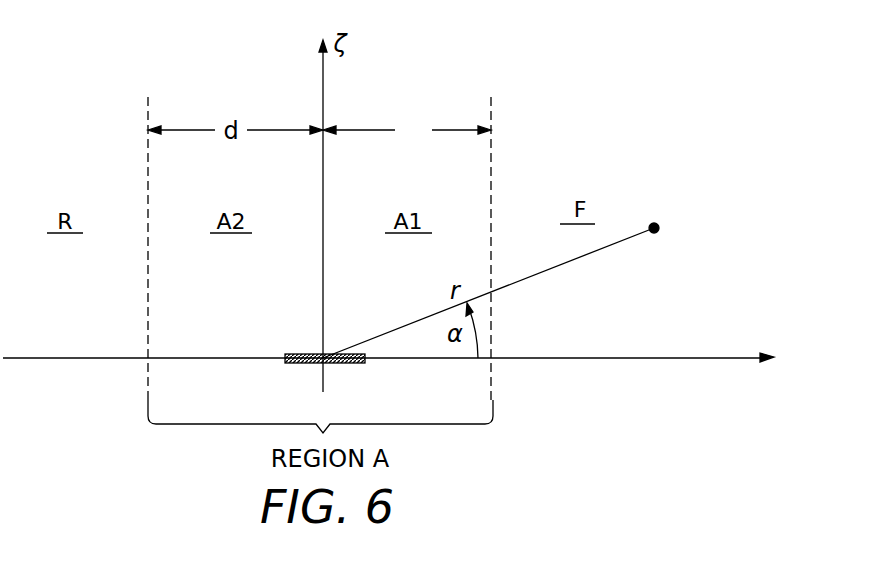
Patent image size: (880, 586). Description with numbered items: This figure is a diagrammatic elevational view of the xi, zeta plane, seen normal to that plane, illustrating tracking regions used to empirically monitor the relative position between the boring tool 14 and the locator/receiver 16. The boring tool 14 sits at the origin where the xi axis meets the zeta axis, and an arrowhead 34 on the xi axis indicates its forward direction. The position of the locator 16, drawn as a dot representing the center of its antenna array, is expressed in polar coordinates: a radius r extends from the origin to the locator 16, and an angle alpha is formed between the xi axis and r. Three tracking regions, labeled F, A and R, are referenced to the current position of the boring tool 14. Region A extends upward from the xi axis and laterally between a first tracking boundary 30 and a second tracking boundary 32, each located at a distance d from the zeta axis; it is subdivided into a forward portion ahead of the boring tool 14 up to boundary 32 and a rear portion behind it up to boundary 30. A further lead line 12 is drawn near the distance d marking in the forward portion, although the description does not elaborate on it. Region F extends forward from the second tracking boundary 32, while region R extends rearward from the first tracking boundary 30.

The aperture width dimension 12 is at (385, 123).
The boring tool 14 is at (295, 353).
The locator/receiver 16 is at (659, 231).
The first tracking boundary 30 is at (148, 112).
The second tracking boundary 32 is at (492, 115).
The arrowhead 34 is at (755, 360).